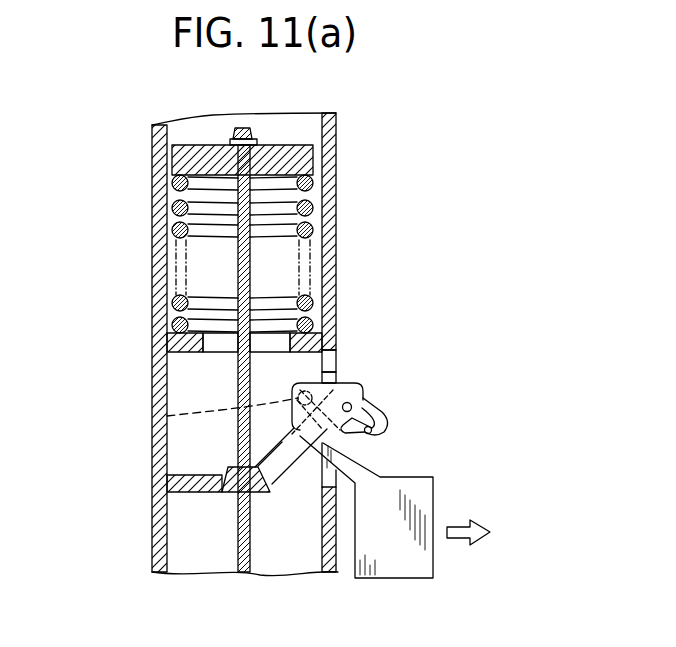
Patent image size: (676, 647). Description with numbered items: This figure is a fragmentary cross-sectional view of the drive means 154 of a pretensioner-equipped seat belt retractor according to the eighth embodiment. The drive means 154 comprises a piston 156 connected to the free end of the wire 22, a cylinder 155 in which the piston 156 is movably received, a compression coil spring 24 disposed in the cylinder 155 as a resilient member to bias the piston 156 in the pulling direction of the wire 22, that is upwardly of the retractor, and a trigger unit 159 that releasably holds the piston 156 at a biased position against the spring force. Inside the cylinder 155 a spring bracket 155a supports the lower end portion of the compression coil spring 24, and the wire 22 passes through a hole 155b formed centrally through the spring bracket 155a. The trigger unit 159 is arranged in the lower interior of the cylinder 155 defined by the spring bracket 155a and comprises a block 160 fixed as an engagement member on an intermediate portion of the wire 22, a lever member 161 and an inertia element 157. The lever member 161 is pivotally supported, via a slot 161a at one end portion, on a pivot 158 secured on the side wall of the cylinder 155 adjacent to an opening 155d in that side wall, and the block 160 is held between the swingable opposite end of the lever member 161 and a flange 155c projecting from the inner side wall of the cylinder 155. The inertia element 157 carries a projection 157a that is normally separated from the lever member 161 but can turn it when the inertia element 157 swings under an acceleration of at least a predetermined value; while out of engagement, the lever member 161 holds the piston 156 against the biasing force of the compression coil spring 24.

The wire 22 is at (250, 555).
The compression coil spring 24 is at (200, 238).
The drive means 154 is at (374, 198).
The cylinder 155 is at (337, 272).
The spring bracket 155a is at (190, 372).
The hole 155b is at (337, 366).
The flange 155c is at (197, 492).
The opening 155d is at (337, 357).
The piston 156 is at (291, 150).
The inertia element 157 is at (434, 490).
The projection 157a is at (165, 410).
The pivot 158 is at (366, 395).
The trigger unit 159 is at (428, 370).
The block 160 is at (268, 492).
The lever member 161 is at (262, 470).
The slot 161a is at (390, 428).